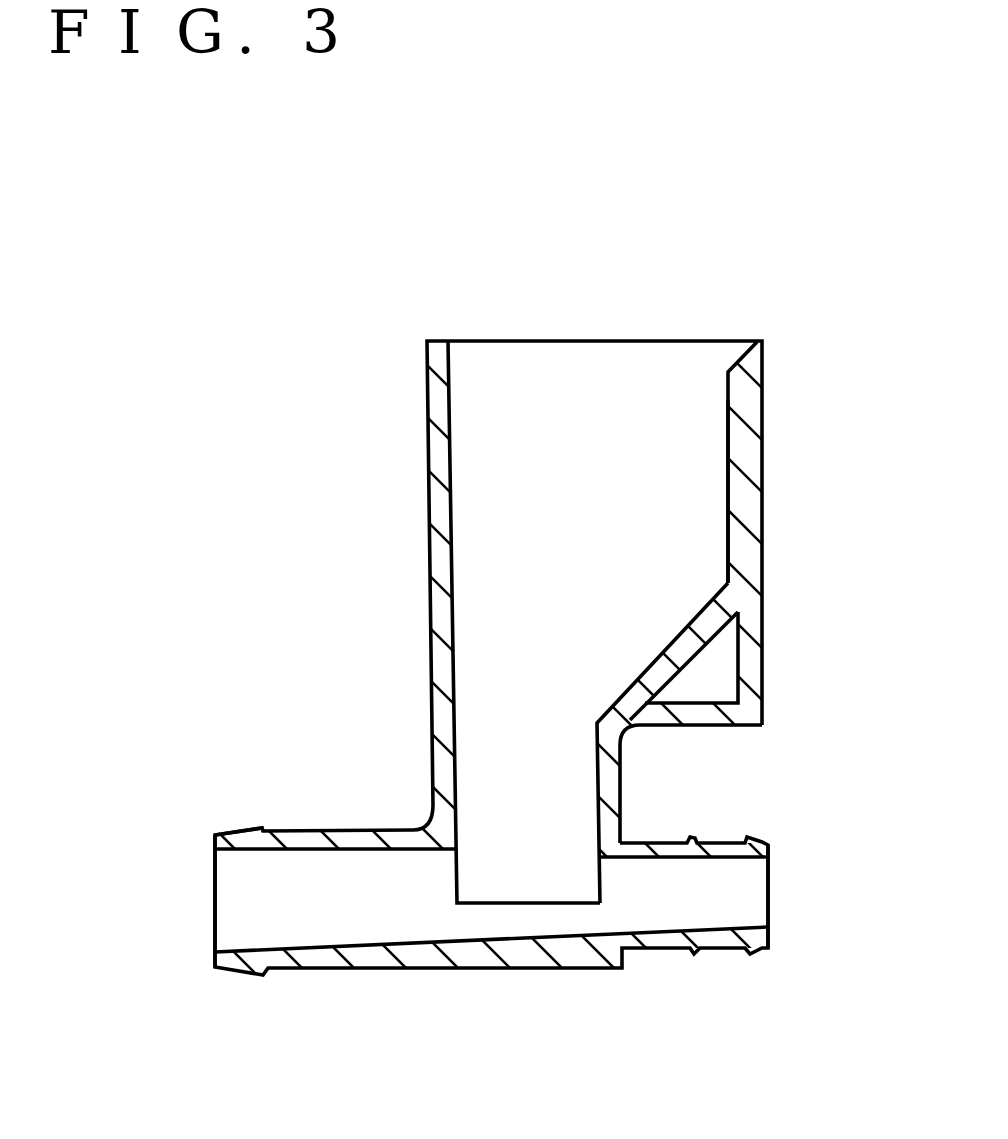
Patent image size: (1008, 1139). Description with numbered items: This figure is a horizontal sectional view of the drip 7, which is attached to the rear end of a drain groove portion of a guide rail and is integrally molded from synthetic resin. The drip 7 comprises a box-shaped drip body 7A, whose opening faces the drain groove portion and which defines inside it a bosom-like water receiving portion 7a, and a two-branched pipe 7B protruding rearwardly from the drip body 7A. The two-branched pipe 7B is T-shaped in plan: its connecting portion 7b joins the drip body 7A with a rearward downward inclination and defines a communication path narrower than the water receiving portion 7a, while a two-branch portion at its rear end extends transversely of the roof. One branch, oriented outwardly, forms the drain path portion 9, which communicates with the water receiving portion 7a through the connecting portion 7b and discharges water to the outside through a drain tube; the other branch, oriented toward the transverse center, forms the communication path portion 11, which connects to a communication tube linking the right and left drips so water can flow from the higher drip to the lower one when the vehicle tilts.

The drip 7 is at (262, 475).
The drip body 7A is at (428, 520).
The two-branched pipe 7B is at (418, 772).
The water receiving portion 7a is at (735, 506).
The connecting portion 7b is at (606, 786).
The drain path portion 9 is at (295, 828).
The communication path portion 11 is at (700, 840).